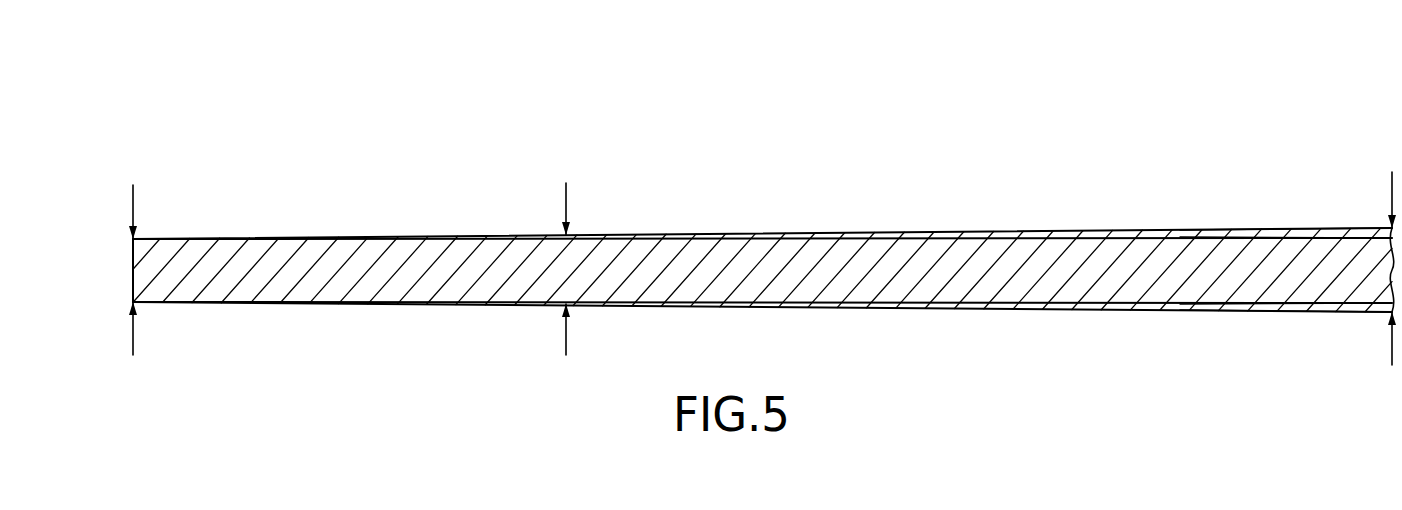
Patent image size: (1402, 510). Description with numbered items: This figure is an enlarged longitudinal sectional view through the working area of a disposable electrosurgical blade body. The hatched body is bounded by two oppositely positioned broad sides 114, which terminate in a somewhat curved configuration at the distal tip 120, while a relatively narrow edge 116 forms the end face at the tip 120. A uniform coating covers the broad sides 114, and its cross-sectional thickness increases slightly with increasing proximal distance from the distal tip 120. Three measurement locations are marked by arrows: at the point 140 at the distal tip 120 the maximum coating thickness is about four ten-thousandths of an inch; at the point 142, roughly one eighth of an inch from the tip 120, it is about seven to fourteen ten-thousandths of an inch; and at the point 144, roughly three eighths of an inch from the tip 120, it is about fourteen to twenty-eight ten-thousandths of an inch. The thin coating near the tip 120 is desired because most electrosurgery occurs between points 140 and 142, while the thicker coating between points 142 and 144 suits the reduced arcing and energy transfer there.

The broad sides 114 is at (1262, 238).
The narrow edges 116 is at (133, 263).
The distal tip 120 is at (1139, 140).
The point at distal tip 140 is at (134, 197).
The point approximately .125 inches from distal tip 142 is at (567, 196).
The point approximately 0.375 inches from distal tip 144 is at (1391, 200).